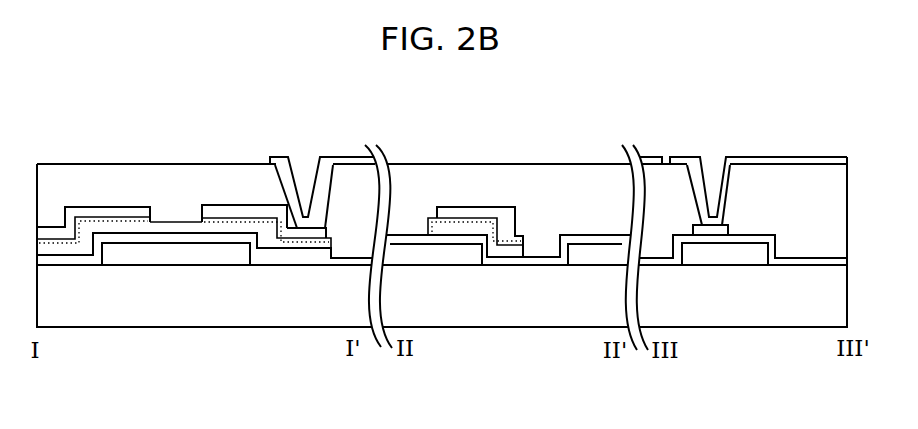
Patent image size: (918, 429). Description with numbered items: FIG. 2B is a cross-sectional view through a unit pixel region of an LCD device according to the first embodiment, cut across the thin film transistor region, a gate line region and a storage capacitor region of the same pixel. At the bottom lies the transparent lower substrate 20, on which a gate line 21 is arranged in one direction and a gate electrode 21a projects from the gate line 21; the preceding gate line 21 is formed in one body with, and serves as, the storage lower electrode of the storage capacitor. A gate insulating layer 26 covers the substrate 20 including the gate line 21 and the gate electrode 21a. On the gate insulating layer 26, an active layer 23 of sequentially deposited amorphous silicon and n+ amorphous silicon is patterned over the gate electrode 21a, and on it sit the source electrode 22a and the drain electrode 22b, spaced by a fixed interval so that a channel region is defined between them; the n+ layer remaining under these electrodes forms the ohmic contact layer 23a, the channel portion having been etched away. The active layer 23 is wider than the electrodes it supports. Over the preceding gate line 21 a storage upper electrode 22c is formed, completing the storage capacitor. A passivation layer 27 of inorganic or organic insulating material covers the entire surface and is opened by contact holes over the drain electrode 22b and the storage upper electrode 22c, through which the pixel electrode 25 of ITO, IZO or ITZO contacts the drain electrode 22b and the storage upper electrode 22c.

The transparent lower substrate 20 is at (578, 313).
The gate line 21 is at (442, 252).
The gate electrode 21a is at (180, 258).
The source electrode 22a is at (125, 210).
The drain electrode 22b is at (282, 208).
The storage upper electrode 22c is at (724, 231).
The active layer 23 is at (182, 230).
The ohmic contact layer 23a is at (245, 222).
The pixel electrode 25 is at (345, 157).
The gate insulating layer 26 is at (303, 256).
The passivation layer 27 is at (585, 184).